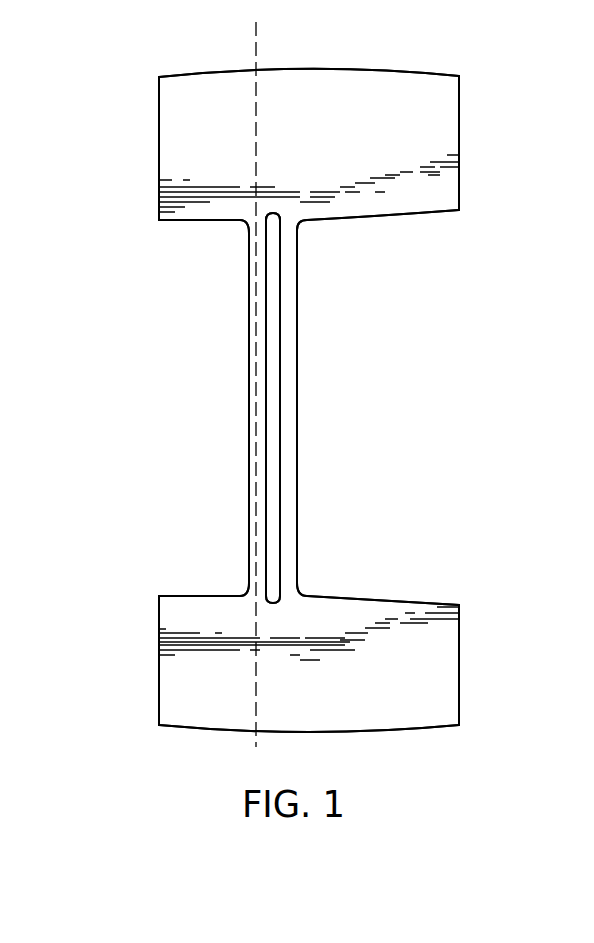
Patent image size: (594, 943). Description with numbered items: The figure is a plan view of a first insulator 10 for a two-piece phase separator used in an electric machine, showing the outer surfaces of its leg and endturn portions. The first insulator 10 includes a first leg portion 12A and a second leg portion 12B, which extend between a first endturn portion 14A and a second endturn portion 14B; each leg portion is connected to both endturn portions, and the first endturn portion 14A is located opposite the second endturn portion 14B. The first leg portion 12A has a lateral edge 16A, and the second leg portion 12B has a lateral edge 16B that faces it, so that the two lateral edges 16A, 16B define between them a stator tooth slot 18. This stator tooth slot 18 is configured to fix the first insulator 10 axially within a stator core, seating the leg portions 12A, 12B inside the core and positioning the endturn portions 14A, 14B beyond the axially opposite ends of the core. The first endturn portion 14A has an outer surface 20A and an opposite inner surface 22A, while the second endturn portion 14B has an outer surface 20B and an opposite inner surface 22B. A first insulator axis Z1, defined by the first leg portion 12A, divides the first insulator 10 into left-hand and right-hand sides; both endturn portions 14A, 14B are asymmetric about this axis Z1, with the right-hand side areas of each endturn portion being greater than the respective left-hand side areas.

The first insulator 10 is at (70, 753).
The first insulator axis Z1 is at (314, 31).
The first leg portion 12A is at (258, 308).
The second leg portion 12B is at (347, 527).
The first endturn portion 14A is at (309, 660).
The second endturn portion 14B is at (309, 148).
The lateral edge 16A is at (325, 478).
The lateral edge 16B is at (280, 401).
The stator tooth slot 18 is at (333, 411).
The outer surface 20A is at (428, 766).
The outer surface 20B is at (421, 254).
The inner surface 22A is at (493, 612).
The inner surface 22B is at (493, 85).